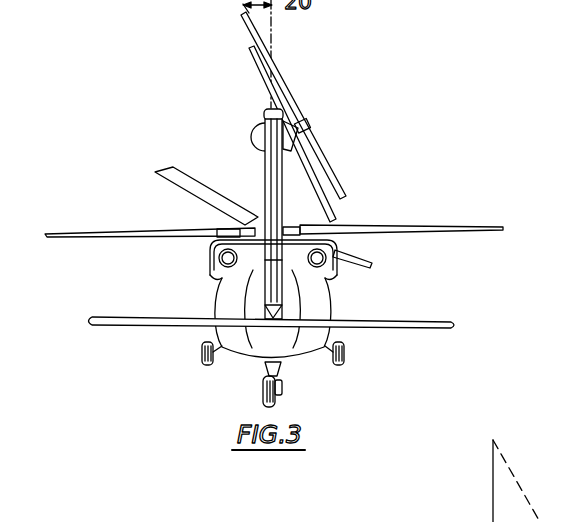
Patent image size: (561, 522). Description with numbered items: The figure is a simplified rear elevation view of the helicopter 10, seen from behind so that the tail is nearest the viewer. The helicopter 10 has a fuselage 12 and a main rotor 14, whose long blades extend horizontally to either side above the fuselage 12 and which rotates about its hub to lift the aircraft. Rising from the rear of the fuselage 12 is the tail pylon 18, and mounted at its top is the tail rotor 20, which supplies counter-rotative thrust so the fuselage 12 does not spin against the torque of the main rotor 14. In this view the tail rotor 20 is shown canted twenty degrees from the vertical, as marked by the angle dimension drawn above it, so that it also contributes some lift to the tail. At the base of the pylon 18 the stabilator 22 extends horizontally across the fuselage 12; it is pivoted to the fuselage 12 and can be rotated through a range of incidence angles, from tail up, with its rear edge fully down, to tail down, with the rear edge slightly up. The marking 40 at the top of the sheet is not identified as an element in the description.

The helicopter 10 is at (421, 172).
The fuselage 12 is at (217, 292).
The lower rotor blade 14 is at (443, 228).
The rotor mast 18 is at (268, 172).
The upper rotor blade 20 is at (248, 32).
The wing 22 is at (377, 320).
The rotor tilt angle 40 is at (150, 6).